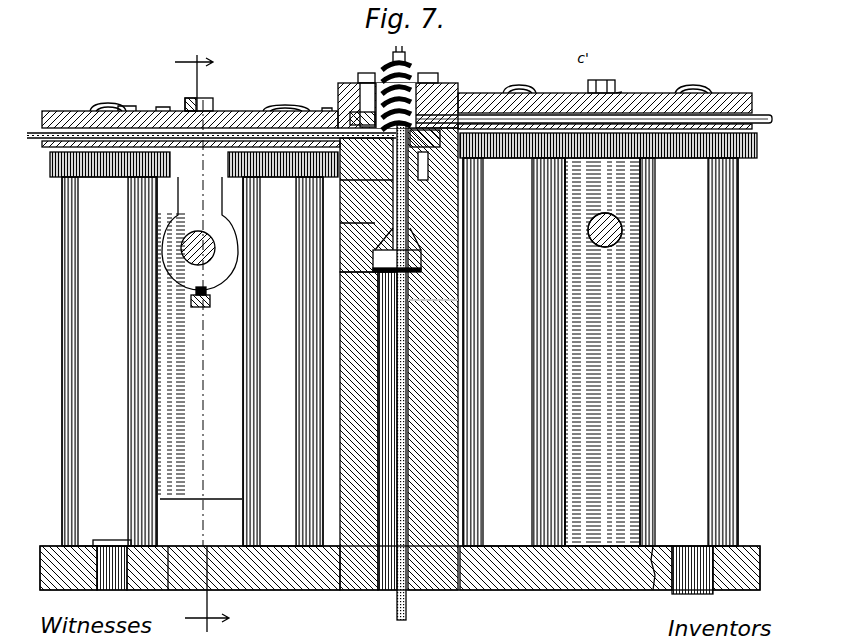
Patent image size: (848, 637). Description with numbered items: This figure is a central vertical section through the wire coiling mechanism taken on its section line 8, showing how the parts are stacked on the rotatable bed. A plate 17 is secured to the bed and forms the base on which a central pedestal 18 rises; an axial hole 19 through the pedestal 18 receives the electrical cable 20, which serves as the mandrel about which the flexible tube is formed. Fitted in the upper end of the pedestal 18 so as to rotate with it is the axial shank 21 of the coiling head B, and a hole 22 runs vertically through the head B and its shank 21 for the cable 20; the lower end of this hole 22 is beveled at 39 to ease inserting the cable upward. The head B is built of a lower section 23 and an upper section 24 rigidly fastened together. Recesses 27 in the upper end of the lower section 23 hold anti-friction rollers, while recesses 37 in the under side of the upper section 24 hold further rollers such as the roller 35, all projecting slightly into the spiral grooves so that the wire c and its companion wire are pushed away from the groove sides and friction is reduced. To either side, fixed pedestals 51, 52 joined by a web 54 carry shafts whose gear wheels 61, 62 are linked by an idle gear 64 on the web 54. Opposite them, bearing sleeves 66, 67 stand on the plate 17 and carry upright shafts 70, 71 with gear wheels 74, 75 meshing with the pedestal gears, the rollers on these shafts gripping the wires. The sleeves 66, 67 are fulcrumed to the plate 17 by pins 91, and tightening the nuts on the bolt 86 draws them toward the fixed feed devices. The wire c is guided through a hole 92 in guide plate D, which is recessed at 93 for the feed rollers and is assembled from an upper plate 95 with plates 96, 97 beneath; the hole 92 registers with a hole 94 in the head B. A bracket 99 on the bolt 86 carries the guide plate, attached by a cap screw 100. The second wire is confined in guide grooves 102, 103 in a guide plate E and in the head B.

The section line 8- 8 is at (202, 334).
The plate 17 is at (600, 563).
The central pedestal 18 is at (446, 454).
The axial hole 19 is at (416, 369).
The electrical cable 20 is at (400, 412).
The axial shank 21 is at (422, 225).
The hole 22 is at (361, 222).
The lower section 23 is at (453, 163).
The upper section 24 is at (462, 92).
The recesses 27 is at (453, 140).
The anti-friction roller 35 is at (360, 83).
The recesses 37 is at (355, 112).
The bevel 39 is at (383, 280).
The pedestal 51 is at (700, 380).
The pedestal 52 is at (530, 385).
The web 54 is at (605, 271).
The gear wheel 61 is at (757, 160).
The gear wheel 62 is at (560, 155).
The idle gear 64 is at (622, 140).
The bearing sleeve 66 is at (88, 318).
The bearing sleeve 67 is at (280, 360).
The upright shaft 70 is at (104, 109).
The upright shaft 71 is at (288, 105).
The gear wheel 74 is at (60, 160).
The gear wheel 75 is at (202, 233).
The bolt 86 is at (212, 252).
The pin 91 is at (125, 592).
The hole 92 is at (228, 131).
The recess 93 is at (125, 109).
The hole 94 is at (335, 160).
The upper plate 95 is at (162, 111).
The plate 96 is at (150, 133).
The plate 97 is at (153, 147).
The bracket 99 is at (197, 323).
The cap screw 100 is at (203, 91).
The guide groove 102 is at (585, 78).
The guide groove 103 is at (470, 92).
The coiling head B is at (398, 88).
The wire c is at (326, 128).
The guide plate E is at (625, 82).